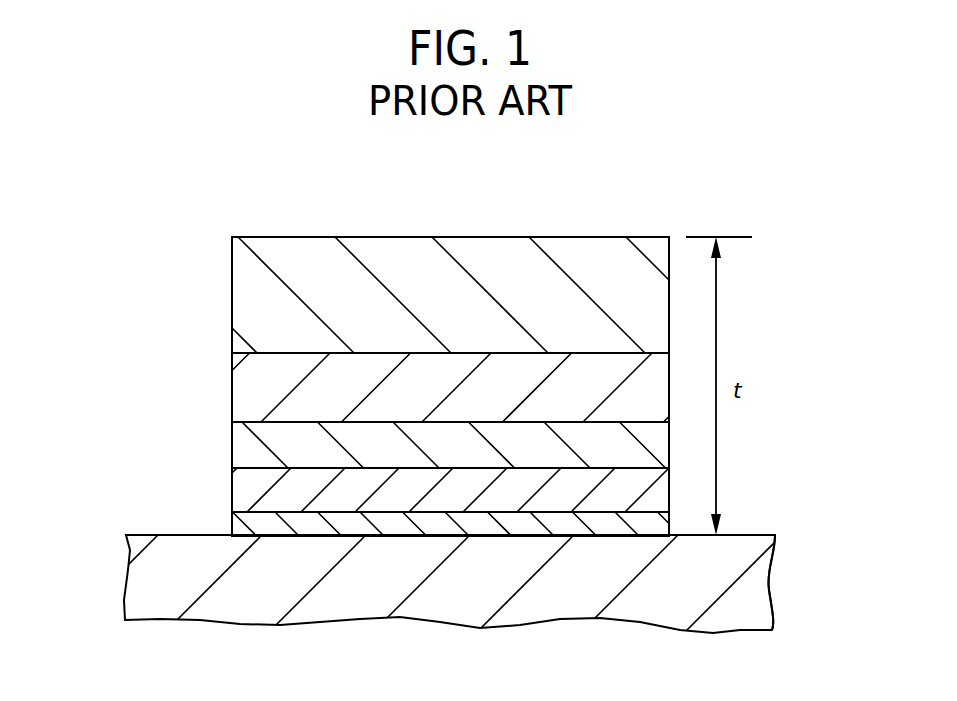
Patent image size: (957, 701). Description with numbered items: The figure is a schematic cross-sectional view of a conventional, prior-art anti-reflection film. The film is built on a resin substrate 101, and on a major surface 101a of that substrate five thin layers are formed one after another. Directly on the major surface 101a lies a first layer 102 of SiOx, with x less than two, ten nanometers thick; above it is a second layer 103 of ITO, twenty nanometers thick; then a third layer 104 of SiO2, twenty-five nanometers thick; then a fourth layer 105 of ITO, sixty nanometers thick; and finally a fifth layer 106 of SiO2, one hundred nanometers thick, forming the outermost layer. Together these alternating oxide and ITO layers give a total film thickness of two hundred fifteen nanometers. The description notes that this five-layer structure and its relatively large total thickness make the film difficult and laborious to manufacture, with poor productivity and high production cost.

The resin substrate 101 is at (147, 588).
The major surface 101a is at (770, 533).
The first layer 102 is at (233, 522).
The second layer 103 is at (243, 487).
The third layer 104 is at (243, 446).
The fourth layer 105 is at (240, 385).
The fifth layer 106 is at (240, 289).